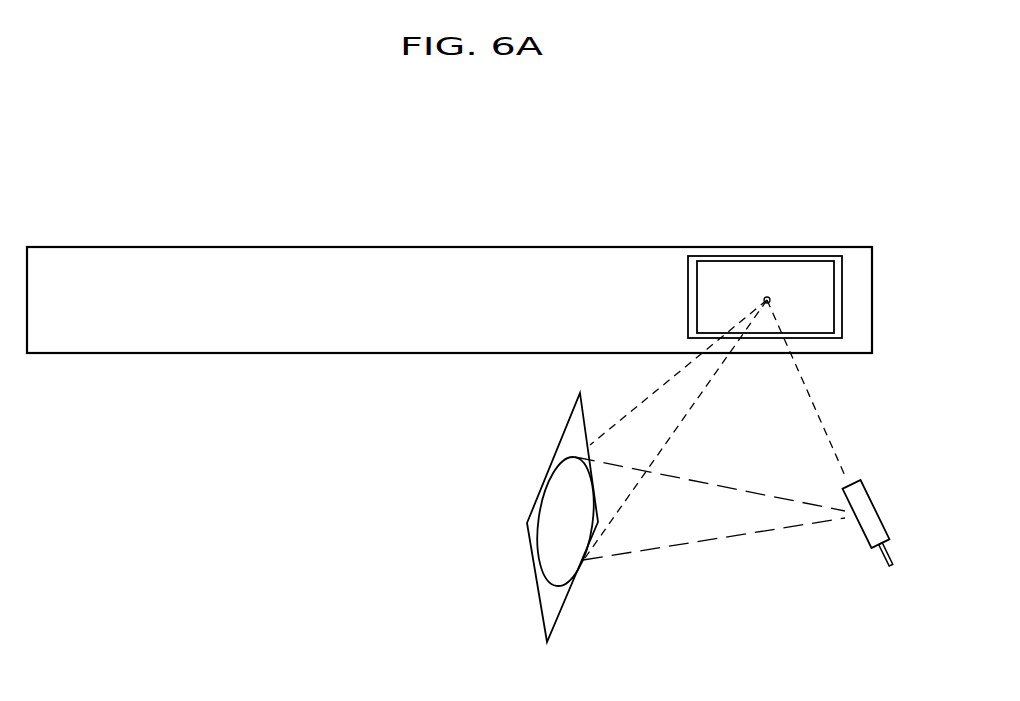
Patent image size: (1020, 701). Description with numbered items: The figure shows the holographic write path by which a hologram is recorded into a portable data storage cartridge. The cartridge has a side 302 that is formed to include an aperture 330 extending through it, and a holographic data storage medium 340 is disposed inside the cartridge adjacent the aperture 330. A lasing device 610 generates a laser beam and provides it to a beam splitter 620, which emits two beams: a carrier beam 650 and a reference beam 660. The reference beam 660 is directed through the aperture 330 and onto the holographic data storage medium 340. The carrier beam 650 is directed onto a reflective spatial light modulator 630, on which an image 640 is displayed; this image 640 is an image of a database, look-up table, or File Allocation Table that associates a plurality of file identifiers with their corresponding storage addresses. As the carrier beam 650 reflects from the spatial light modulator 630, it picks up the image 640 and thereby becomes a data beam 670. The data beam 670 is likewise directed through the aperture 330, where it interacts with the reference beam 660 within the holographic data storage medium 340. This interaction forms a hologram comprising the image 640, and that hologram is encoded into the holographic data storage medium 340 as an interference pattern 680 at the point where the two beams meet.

The side 302 is at (355, 317).
The aperture 330 is at (842, 311).
The holographic data storage medium 340 is at (743, 299).
The interference pattern 680 is at (767, 297).
The data beam 670 is at (652, 424).
The reference beam 660 is at (808, 391).
The reflective spatial light modulator 630 is at (531, 561).
The image 640 is at (566, 521).
The carrier beam 650 is at (706, 541).
The beam splitter 620 is at (859, 485).
The lasing device 610 is at (888, 567).